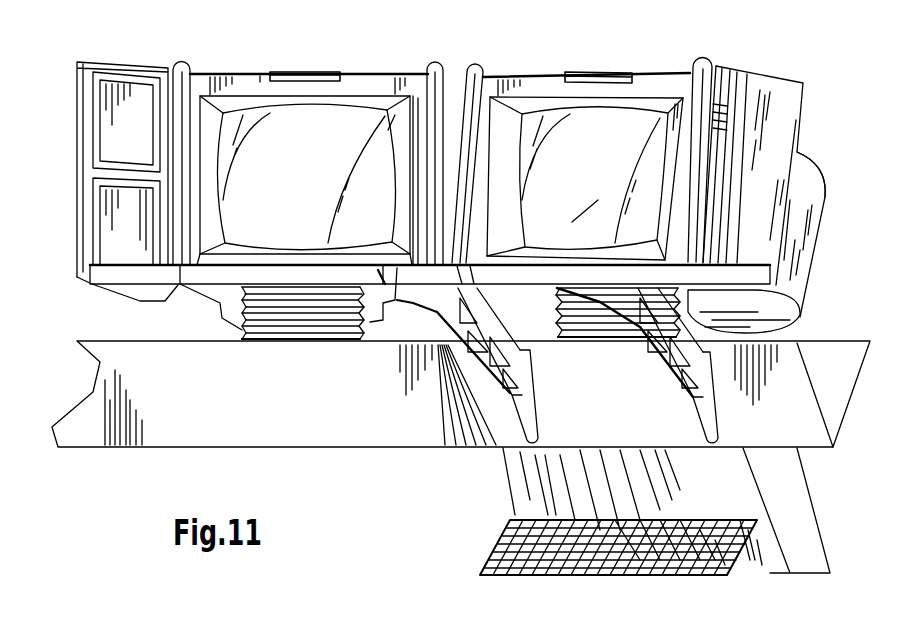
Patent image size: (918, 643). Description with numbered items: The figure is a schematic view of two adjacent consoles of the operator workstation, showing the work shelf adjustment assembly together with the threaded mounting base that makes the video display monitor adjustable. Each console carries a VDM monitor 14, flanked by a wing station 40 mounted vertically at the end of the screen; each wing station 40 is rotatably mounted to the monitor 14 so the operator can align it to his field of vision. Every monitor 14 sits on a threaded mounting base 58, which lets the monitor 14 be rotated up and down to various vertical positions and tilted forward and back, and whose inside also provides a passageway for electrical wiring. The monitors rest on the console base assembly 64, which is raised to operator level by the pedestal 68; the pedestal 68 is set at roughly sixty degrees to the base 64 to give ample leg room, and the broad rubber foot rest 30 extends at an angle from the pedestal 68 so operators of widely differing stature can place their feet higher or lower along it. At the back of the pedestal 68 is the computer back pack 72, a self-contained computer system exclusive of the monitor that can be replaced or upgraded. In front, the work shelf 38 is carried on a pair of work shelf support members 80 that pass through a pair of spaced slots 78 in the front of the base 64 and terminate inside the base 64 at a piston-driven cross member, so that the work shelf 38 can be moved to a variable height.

The VDM monitor 14 is at (367, 73).
The foot rest 30 is at (637, 562).
The work shelf 38 is at (413, 290).
The wing station 40 is at (80, 163).
The threaded mounting base 58 is at (300, 330).
The base assembly 64 is at (798, 420).
The pedestal 68 is at (806, 530).
The computer back pack 72 is at (826, 197).
The slots 78 is at (517, 418).
The work shelf support members 80 is at (472, 350).